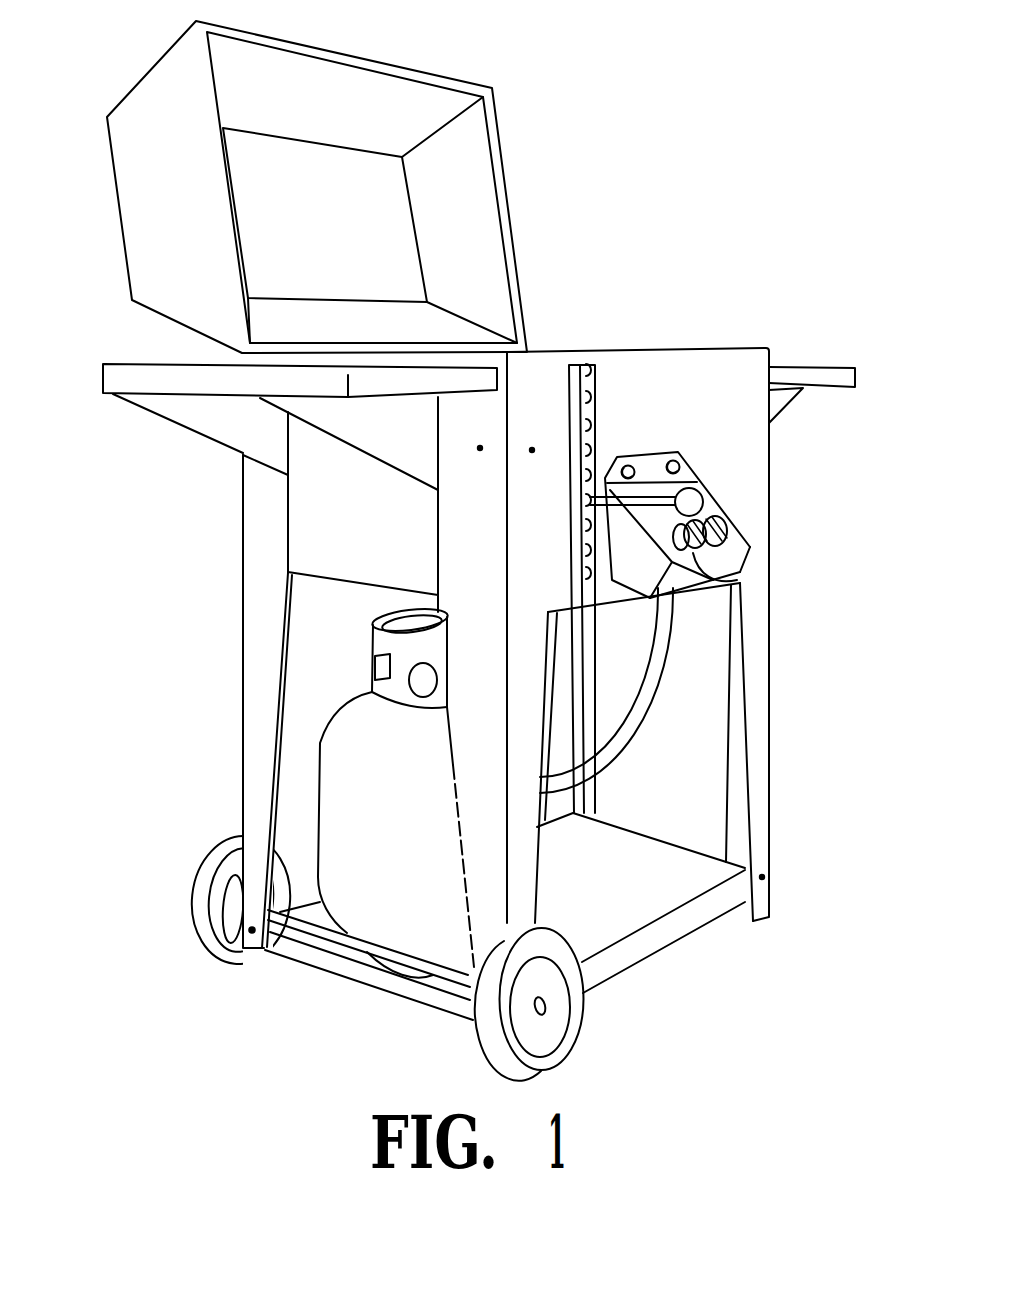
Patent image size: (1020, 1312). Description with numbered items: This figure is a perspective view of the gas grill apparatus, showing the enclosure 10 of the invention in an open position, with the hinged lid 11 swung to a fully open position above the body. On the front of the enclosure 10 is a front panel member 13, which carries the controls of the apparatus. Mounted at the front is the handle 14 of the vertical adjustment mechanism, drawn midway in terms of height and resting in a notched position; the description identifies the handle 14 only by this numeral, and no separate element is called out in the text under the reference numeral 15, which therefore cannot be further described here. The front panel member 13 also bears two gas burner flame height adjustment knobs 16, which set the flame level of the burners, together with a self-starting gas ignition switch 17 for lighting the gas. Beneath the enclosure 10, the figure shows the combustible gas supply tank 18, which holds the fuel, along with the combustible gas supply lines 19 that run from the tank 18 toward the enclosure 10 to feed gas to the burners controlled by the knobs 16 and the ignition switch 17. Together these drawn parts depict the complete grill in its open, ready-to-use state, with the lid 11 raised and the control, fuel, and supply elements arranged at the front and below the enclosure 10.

The enclosure 10 is at (709, 349).
The hinged lid 11 is at (135, 199).
The front panel member 13 is at (556, 559).
The handle 14 is at (647, 497).
The control knob 15 is at (696, 502).
The flame height adjustment knobs 16 is at (738, 576).
The self-starting gas ignition switch 17 is at (733, 523).
The combustible gas supply tank 18 is at (347, 737).
The combustible gas supply lines 19 is at (630, 752).